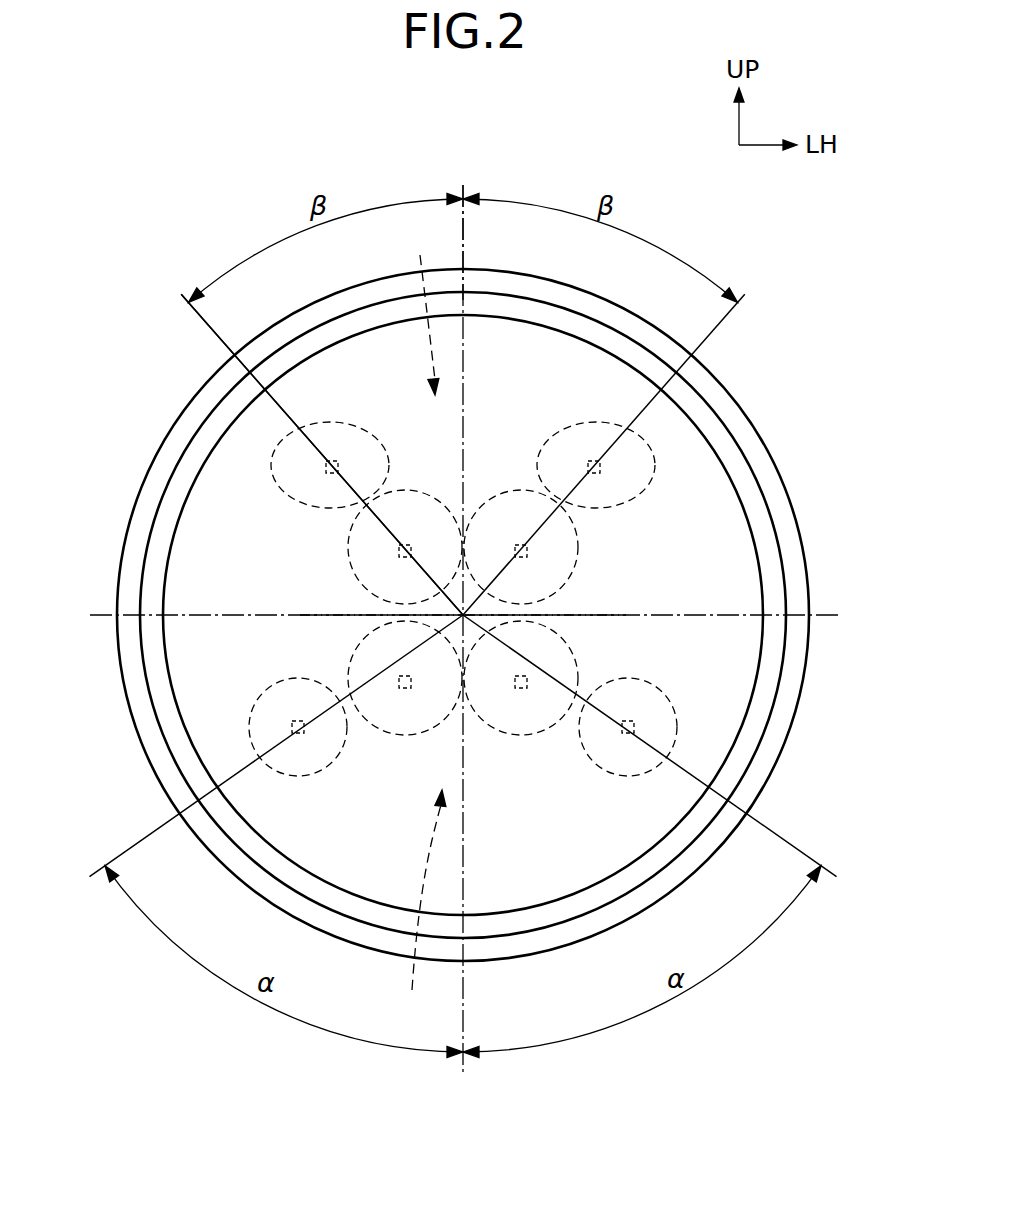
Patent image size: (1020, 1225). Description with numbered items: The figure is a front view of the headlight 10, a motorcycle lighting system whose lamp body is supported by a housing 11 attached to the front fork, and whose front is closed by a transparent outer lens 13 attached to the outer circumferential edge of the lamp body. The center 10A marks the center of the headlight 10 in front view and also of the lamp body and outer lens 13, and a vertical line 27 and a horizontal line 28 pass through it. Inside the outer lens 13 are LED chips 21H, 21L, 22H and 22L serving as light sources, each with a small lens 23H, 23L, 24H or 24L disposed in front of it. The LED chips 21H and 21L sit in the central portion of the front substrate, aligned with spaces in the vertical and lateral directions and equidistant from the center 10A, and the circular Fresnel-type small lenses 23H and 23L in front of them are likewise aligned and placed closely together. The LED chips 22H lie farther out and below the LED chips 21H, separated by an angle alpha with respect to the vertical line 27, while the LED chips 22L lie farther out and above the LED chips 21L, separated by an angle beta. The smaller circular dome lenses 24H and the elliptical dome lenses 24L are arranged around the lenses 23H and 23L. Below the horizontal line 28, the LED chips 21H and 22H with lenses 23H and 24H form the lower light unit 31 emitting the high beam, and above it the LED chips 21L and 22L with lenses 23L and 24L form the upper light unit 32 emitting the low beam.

The headlight 10 is at (262, 412).
The center of the headlight 10A is at (497, 606).
The housing 11 is at (778, 760).
The outer lens 13 is at (205, 598).
The LED chip 21L is at (410, 543).
The LED chip 21H is at (410, 690).
The LED chip 22L is at (278, 452).
The LED chip 22H is at (300, 776).
The small lens 23L is at (348, 548).
The small lens 23H is at (368, 722).
The small lens 24L is at (322, 466).
The small lens 24H is at (290, 727).
The vertical line 27 is at (462, 262).
The horizontal line 28 is at (820, 620).
The lower light unit 31 is at (420, 903).
The upper light unit 32 is at (424, 308).